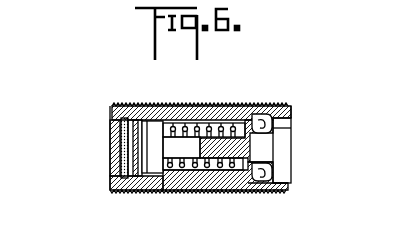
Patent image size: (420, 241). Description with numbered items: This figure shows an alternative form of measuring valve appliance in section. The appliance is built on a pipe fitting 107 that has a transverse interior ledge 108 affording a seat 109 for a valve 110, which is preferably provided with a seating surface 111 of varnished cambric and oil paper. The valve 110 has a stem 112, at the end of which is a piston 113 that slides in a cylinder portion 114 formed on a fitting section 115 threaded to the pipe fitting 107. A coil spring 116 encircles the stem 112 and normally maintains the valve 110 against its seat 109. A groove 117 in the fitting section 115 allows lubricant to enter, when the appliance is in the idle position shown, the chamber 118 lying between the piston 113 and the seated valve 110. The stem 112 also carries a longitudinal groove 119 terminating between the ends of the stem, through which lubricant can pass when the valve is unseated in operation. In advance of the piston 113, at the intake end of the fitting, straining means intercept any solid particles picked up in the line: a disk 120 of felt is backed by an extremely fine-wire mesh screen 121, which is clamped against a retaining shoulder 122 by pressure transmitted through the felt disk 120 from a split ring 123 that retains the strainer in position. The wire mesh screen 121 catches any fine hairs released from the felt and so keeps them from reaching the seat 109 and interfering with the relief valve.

The pipe fitting 107 is at (233, 104).
The transverse interior ledge 108 is at (247, 194).
The seat 109 is at (272, 105).
The valve 110 is at (273, 152).
The seating surface 111 is at (291, 128).
The stem 112 is at (228, 123).
The piston 113 is at (128, 150).
The cylinder portion 114 is at (200, 126).
The fitting section 115 is at (171, 108).
The coil spring 116 is at (155, 192).
The groove 117 is at (180, 160).
The chamber 118 is at (208, 168).
The longitudinal groove 119 is at (253, 116).
The disk of felt 120 is at (122, 128).
The fine-wire mesh screen 121 is at (155, 146).
The retaining shoulder 122 is at (141, 117).
The split ring 123 is at (128, 165).